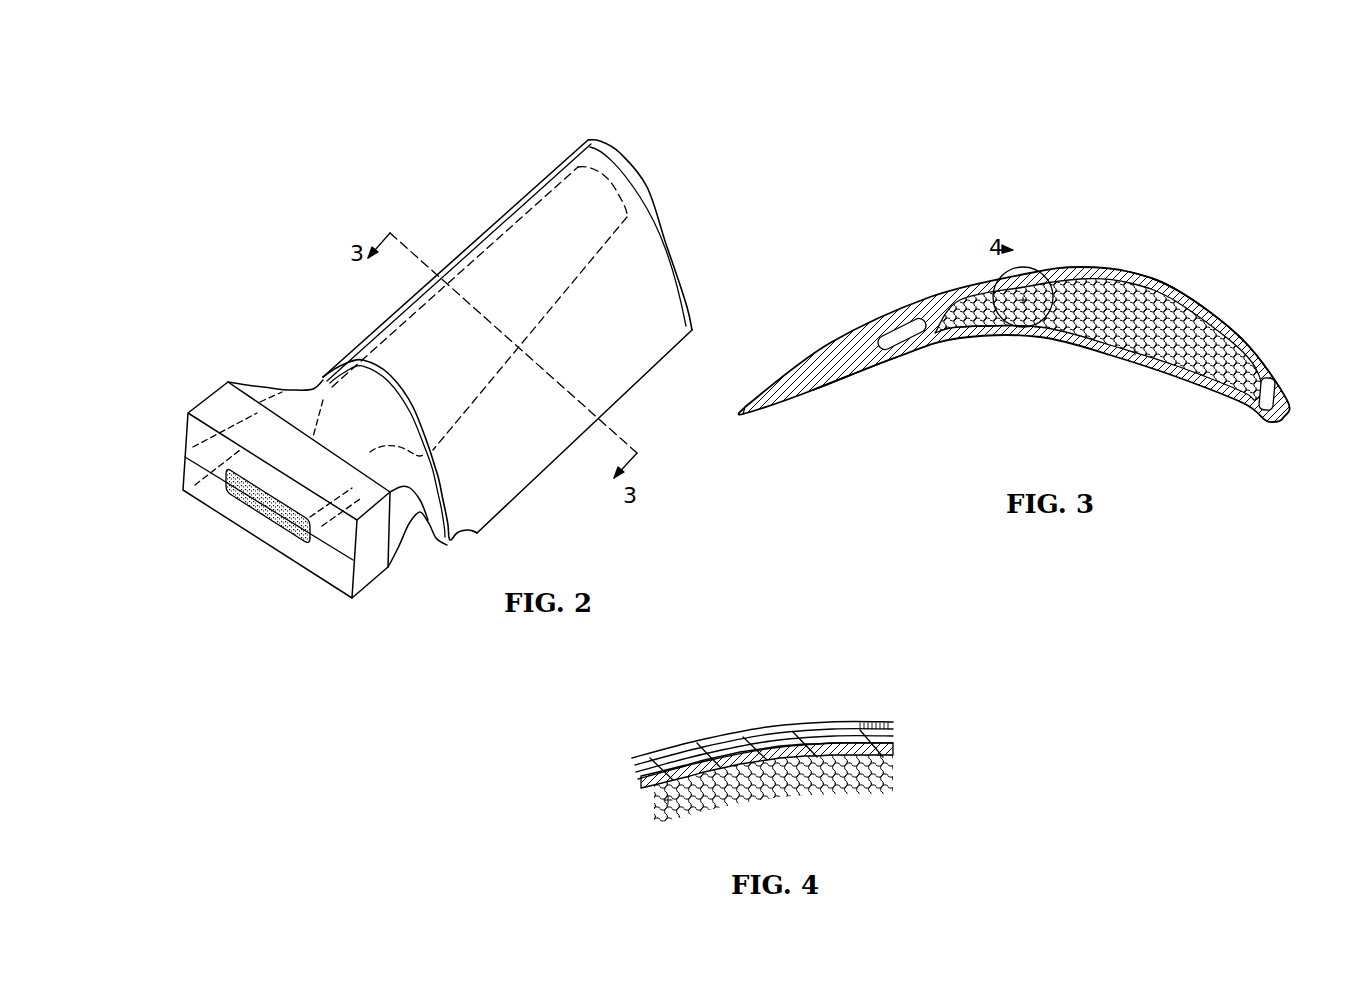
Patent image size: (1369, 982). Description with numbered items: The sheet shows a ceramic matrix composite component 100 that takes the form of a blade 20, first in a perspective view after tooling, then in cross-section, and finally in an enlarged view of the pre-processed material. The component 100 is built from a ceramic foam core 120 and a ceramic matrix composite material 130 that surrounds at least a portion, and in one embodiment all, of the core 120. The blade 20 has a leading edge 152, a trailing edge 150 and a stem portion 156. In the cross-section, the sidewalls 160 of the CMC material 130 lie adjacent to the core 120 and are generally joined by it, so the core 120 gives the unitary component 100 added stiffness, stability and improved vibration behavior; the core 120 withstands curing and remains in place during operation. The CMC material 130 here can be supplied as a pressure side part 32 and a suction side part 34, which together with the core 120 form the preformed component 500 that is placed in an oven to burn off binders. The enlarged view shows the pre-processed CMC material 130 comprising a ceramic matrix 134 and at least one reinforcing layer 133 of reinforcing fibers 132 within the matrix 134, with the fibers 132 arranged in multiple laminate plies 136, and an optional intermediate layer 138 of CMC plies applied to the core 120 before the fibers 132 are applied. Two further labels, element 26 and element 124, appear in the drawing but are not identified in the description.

In FIG. 2, the CMC component 100 is at (697, 97).
In FIG. 3, the CMC component 100 is at (1203, 232).
In FIG. 2, the blade 20 is at (641, 238).
In FIG. 2, the leading edge 26 is at (648, 172).
In FIG. 3, the pressure side part 32 is at (993, 342).
In FIG. 3, the suction side part 34 is at (1187, 308).
In FIG. 2, the ceramic foam core 120 is at (266, 508).
In FIG. 3, the ceramic foam core 120 is at (1225, 322).
In FIG. 4, the ceramic foam core 120 is at (803, 810).
In FIG. 3, the inner surface 124 is at (1060, 330).
In FIG. 4, the inner surface 124 is at (735, 812).
In FIG. 2, the CMC material 130 is at (498, 492).
In FIG. 3, the CMC material 130 is at (1065, 282).
In FIG. 4, the CMC material 130 is at (728, 732).
In FIG. 3, the reinforcing fibers 132 is at (1120, 272).
In FIG. 4, the reinforcing fibers 132 is at (867, 728).
In FIG. 4, the reinforcing layer 133 is at (682, 743).
In FIG. 4, the ceramic matrix 134 is at (803, 737).
In FIG. 4, the laminate plies 136 is at (799, 728).
In FIG. 4, the intermediate layer 138 is at (870, 757).
In FIG. 3, the trailing edge 150 is at (743, 420).
In FIG. 3, the leading edge 152 is at (1280, 381).
In FIG. 2, the stem portion 156 is at (375, 593).
In FIG. 3, the sidewalls 160 is at (1027, 296).
In FIG. 4, the sidewalls 160 is at (668, 800).
In FIG. 4, the preformed CMC component 500 is at (945, 680).